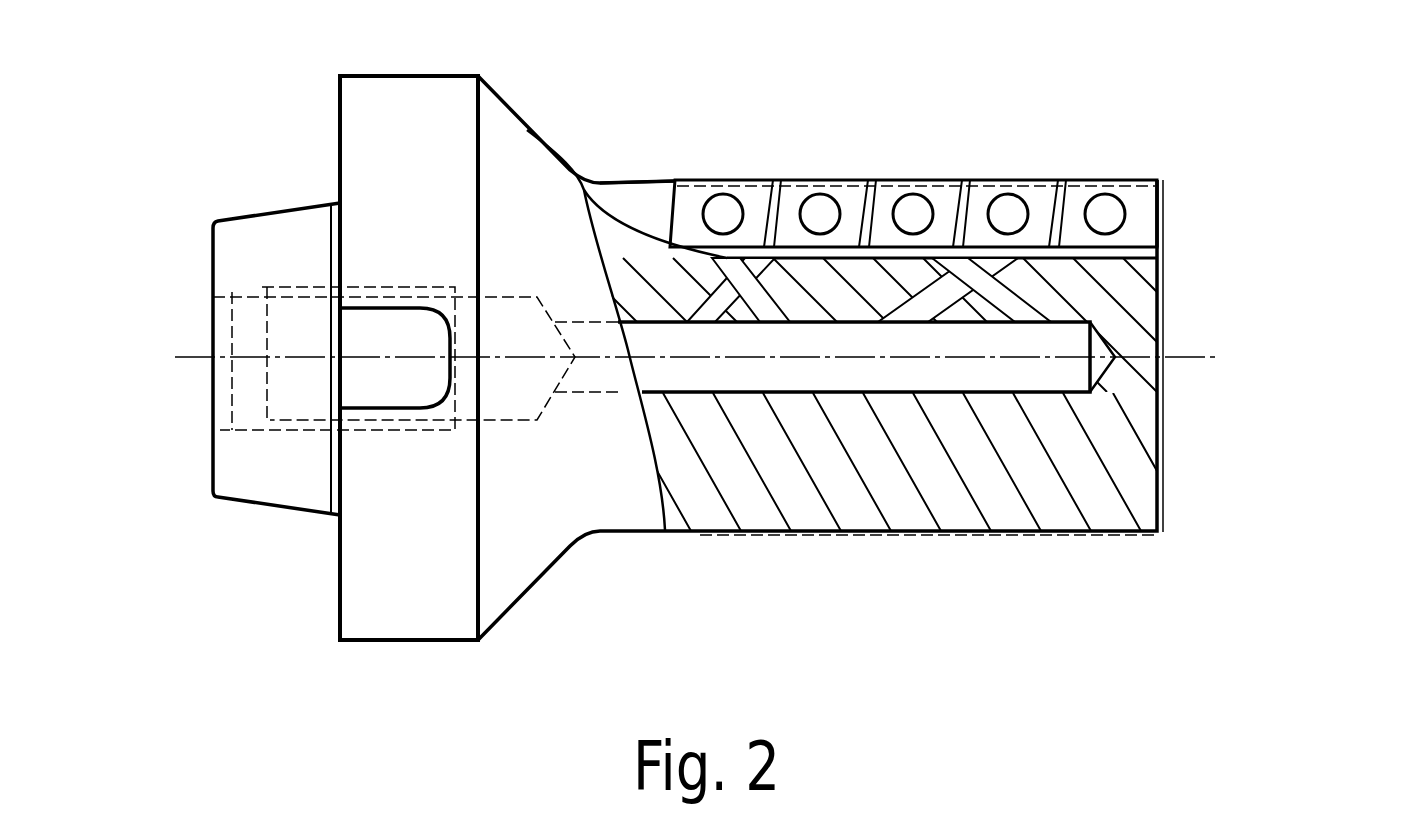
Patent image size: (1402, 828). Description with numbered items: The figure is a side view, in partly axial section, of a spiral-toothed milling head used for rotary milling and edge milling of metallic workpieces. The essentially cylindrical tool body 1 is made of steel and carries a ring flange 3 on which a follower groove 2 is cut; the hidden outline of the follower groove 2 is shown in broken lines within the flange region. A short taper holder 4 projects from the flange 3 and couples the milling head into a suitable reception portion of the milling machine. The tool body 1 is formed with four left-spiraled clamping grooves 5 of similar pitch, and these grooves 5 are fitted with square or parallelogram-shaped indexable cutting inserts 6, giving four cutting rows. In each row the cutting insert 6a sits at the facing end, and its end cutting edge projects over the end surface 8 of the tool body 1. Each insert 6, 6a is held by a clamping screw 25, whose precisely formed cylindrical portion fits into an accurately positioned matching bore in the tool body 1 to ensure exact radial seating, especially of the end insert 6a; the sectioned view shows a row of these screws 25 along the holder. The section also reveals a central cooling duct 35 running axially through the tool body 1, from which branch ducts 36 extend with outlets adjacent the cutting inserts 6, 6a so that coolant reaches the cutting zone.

The tool body 1 is at (1113, 468).
The follower groove 2 is at (377, 332).
The flange 3 is at (398, 615).
The short taper holder 4 is at (272, 487).
The spiral clamping grooves 5 is at (643, 208).
The indexable cutting inserts 6 is at (948, 185).
The end cutting insert 6a is at (1160, 180).
The end surface 8 is at (1153, 317).
The clamping screw 25 is at (723, 205).
The cooling duct 35 is at (938, 370).
The branch ducts 36 is at (1035, 275).